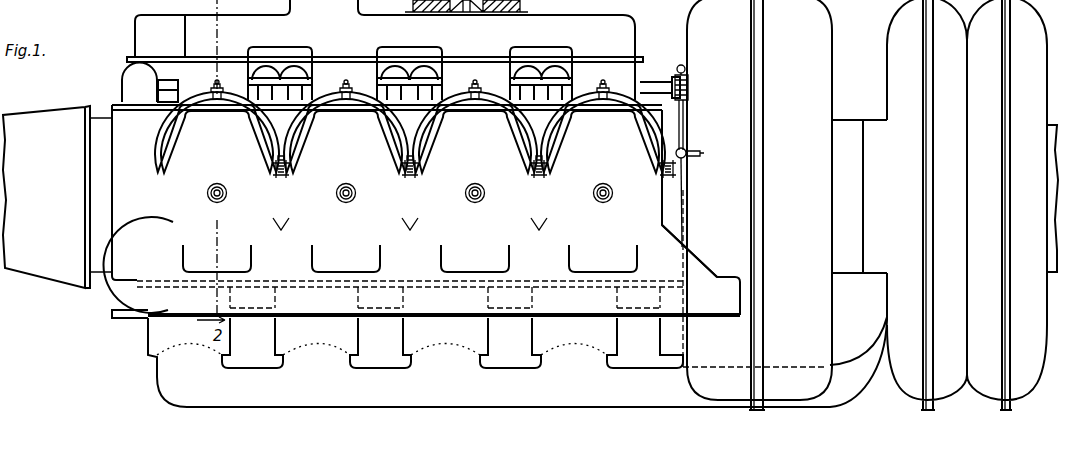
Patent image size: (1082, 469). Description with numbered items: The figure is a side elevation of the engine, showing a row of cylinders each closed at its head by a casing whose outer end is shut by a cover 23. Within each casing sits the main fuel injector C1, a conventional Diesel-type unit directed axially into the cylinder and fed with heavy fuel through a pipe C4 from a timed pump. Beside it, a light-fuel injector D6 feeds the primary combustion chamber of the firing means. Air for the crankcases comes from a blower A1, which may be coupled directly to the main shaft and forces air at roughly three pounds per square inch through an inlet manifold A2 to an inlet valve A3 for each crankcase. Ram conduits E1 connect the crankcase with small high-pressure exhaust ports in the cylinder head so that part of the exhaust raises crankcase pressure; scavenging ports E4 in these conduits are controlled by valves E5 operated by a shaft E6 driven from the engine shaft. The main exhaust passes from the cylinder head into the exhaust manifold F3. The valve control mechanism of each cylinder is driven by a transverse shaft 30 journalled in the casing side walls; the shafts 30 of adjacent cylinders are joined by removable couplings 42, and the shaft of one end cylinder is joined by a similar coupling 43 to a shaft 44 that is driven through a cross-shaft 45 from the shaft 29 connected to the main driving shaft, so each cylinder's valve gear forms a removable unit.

The cover 23 is at (172, 200).
The shaft 29 is at (687, 69).
The shaft 30 is at (290, 170).
The removable couplings 42 is at (283, 160).
The coupling 43 is at (684, 142).
The shaft 44 is at (684, 200).
The cross-shaft 45 is at (686, 113).
The blower A1 is at (972, 205).
The inlet manifold A2 is at (517, 362).
The inlet valve A3 is at (285, 337).
The injector C1 is at (229, 183).
The pipe C4 is at (227, 193).
The injector D6 is at (214, 93).
The ram conduits E1 is at (130, 80).
The exhaust or scavenging ports E4 is at (319, 66).
The valves E5 is at (158, 62).
The shaft E6 is at (417, 83).
The exhaust manifold F3 is at (664, 308).